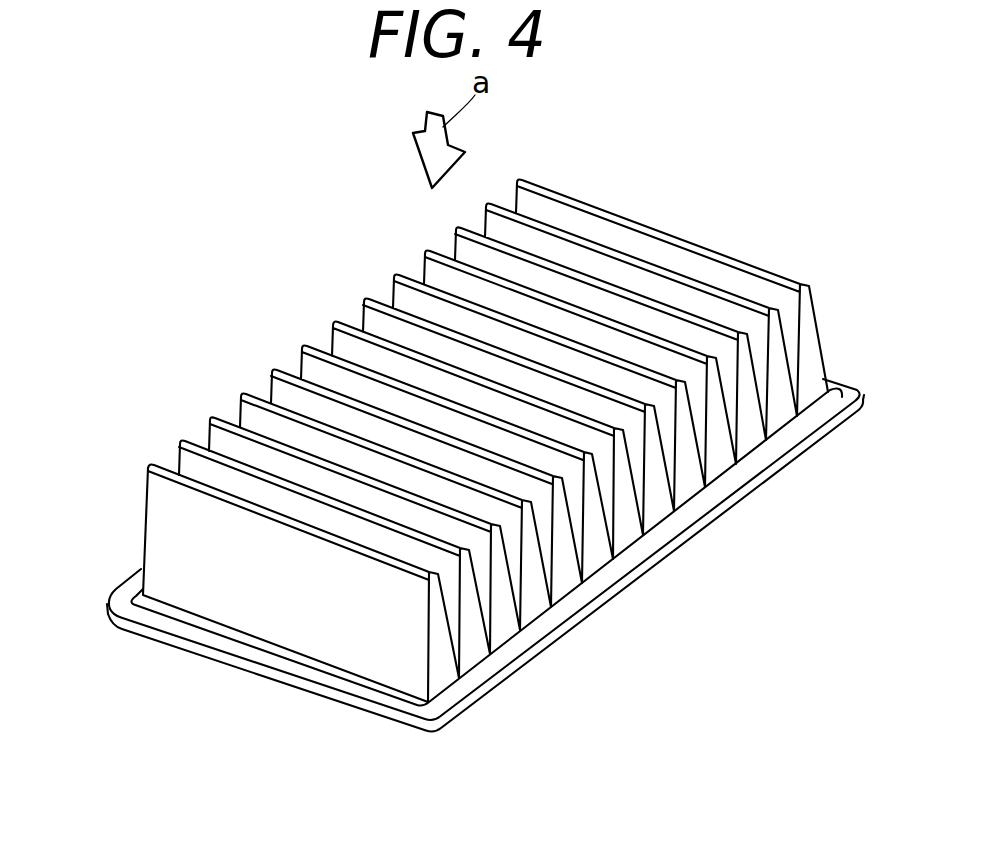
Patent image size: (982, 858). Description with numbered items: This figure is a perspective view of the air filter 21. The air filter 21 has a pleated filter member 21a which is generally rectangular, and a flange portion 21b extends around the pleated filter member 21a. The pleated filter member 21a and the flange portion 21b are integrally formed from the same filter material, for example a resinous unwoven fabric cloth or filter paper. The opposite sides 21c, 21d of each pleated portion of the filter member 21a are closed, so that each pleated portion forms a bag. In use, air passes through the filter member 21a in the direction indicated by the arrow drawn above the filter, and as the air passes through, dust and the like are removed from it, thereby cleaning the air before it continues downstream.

The air filter 21 is at (581, 180).
The pleated filter member 21a is at (408, 277).
The flange portion 21b is at (608, 587).
The side of pleated portion 21c is at (143, 520).
The side of pleated portion 21d is at (440, 652).